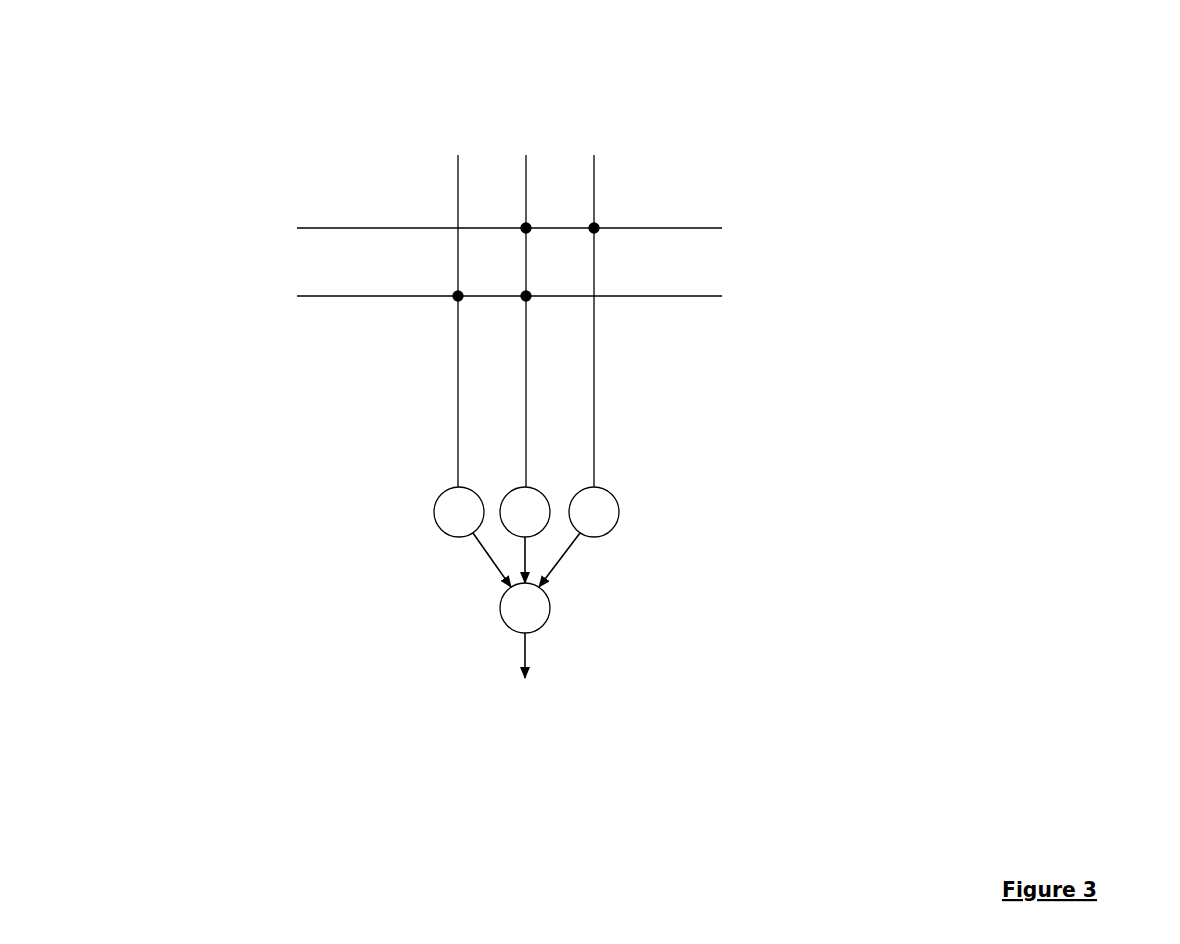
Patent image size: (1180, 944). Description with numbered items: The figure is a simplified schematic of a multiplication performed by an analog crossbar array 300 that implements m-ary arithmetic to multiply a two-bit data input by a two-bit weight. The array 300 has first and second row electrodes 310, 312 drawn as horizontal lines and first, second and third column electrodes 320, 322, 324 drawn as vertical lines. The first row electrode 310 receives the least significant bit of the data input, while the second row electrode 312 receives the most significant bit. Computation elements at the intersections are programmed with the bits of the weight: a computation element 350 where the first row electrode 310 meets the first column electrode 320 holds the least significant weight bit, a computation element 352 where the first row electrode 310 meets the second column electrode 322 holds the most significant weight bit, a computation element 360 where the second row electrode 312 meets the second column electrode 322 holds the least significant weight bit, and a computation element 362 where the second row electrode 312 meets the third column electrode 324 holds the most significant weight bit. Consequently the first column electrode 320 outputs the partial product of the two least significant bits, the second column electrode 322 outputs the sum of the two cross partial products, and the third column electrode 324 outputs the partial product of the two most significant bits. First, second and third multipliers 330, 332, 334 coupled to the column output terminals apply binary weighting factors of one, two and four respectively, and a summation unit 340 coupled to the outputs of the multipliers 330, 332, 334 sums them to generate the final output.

The crossbar array 300 is at (258, 94).
The first row electrode 310 is at (370, 296).
The second row electrode 312 is at (362, 228).
The first column electrode 320 is at (458, 156).
The second column electrode 322 is at (526, 156).
The third column electrode 324 is at (594, 156).
The first multiplier 330 is at (468, 500).
The second multiplier 332 is at (536, 500).
The third multiplier 334 is at (606, 500).
The summation unit 340 is at (513, 620).
The computation element 350 is at (455, 300).
The computation element 352 is at (524, 300).
The computation element 360 is at (526, 228).
The computation element 362 is at (596, 230).